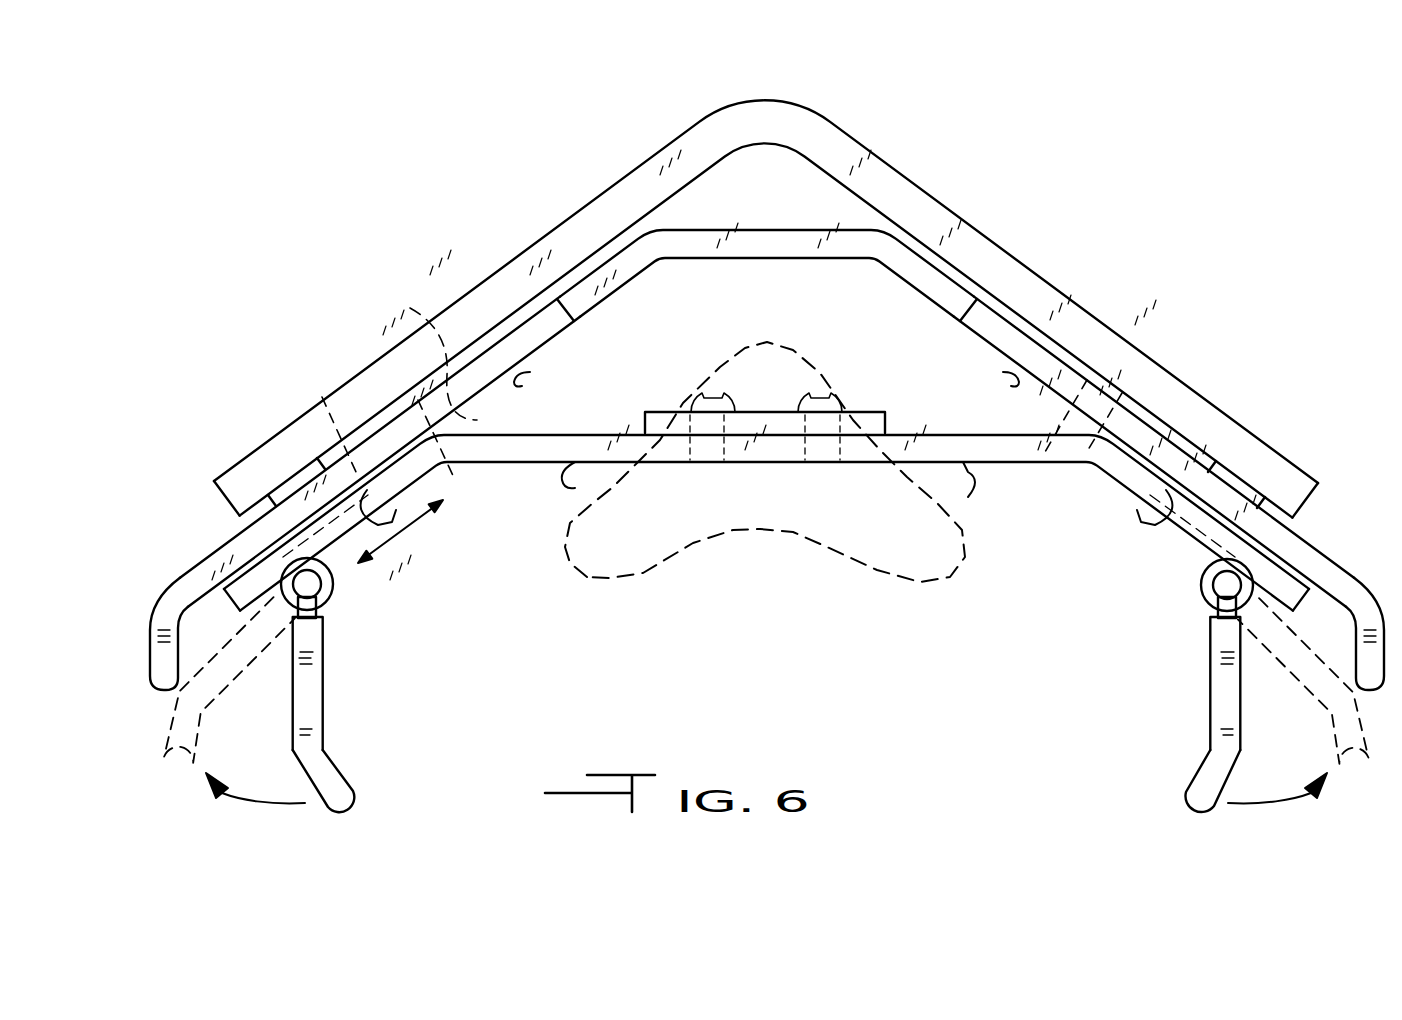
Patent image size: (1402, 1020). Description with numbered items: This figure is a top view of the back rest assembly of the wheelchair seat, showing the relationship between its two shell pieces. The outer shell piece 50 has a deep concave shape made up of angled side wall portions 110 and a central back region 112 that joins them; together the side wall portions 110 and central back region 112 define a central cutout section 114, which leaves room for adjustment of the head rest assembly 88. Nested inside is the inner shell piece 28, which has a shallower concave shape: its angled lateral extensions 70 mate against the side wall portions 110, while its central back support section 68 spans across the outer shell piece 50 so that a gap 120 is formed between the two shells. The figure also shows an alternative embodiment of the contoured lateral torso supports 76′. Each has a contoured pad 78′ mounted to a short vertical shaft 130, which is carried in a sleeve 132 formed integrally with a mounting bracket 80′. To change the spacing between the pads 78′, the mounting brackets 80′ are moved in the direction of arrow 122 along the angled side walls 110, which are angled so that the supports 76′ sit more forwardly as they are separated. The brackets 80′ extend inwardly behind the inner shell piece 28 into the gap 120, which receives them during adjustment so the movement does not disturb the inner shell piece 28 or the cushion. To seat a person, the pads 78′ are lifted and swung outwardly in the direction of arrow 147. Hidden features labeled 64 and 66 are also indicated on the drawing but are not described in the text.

The inner shell piece 28 is at (962, 458).
The outer shell piece 50 is at (153, 668).
The fastener 64 is at (316, 389).
The fastener 66 is at (421, 320).
The central back support section 68 is at (575, 465).
The angled lateral extensions 70 is at (245, 576).
The contoured lateral torso supports 76′ is at (314, 808).
The contoured pads 78′ is at (324, 693).
The mounting brackets 80′ is at (531, 379).
The head rest assembly 88 is at (807, 540).
The angled side wall portions 110 is at (387, 437).
The central back region 112 is at (785, 238).
The central cutout section 114 is at (967, 300).
The gap 120 is at (643, 293).
The arrow 122 is at (405, 527).
The short vertical shafts 130 is at (312, 592).
The sleeves 132 is at (325, 578).
The arrow 147 is at (262, 804).